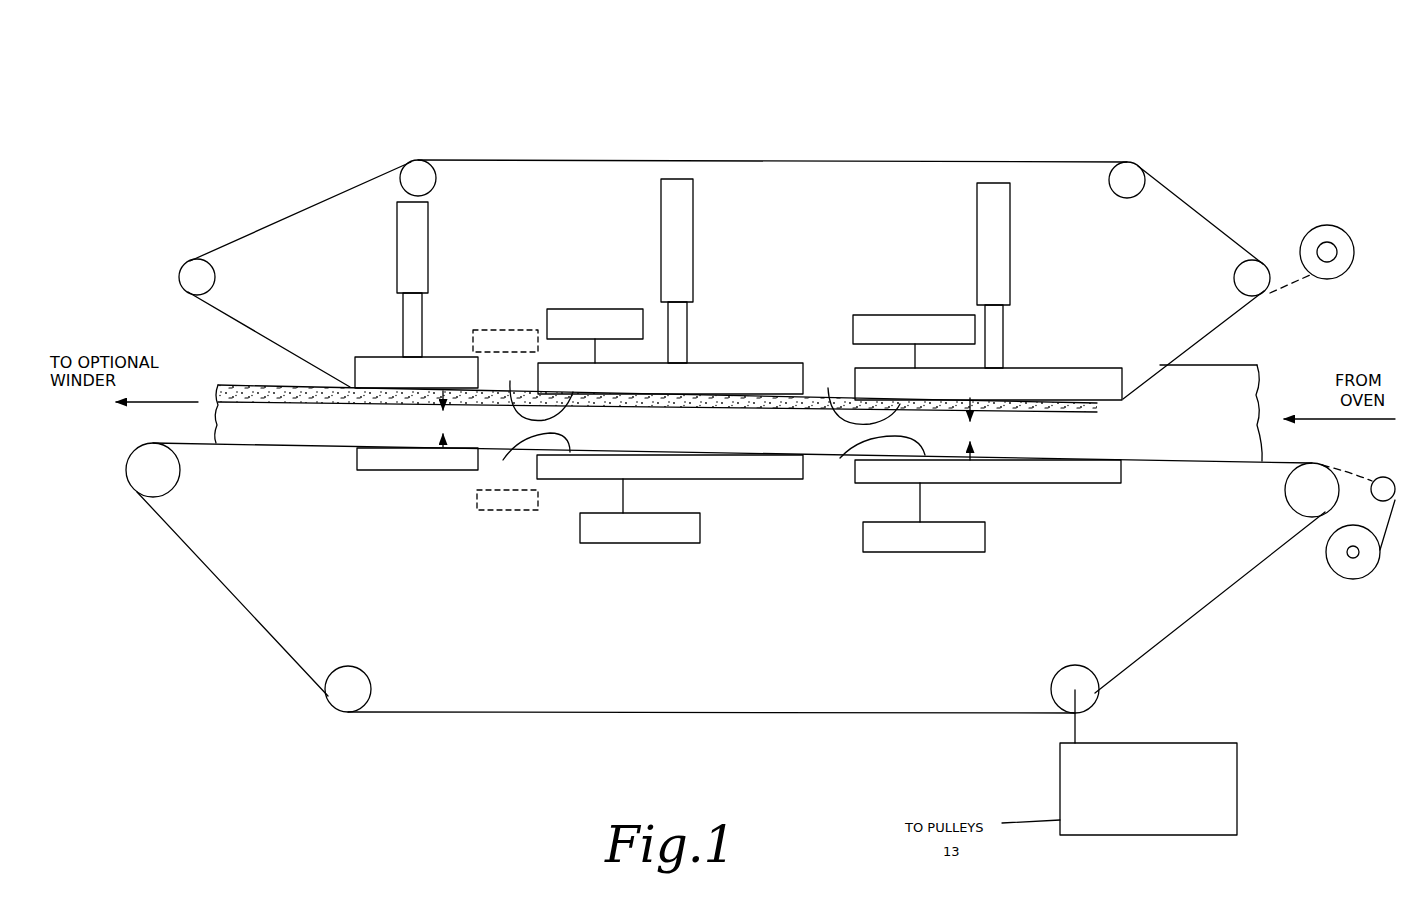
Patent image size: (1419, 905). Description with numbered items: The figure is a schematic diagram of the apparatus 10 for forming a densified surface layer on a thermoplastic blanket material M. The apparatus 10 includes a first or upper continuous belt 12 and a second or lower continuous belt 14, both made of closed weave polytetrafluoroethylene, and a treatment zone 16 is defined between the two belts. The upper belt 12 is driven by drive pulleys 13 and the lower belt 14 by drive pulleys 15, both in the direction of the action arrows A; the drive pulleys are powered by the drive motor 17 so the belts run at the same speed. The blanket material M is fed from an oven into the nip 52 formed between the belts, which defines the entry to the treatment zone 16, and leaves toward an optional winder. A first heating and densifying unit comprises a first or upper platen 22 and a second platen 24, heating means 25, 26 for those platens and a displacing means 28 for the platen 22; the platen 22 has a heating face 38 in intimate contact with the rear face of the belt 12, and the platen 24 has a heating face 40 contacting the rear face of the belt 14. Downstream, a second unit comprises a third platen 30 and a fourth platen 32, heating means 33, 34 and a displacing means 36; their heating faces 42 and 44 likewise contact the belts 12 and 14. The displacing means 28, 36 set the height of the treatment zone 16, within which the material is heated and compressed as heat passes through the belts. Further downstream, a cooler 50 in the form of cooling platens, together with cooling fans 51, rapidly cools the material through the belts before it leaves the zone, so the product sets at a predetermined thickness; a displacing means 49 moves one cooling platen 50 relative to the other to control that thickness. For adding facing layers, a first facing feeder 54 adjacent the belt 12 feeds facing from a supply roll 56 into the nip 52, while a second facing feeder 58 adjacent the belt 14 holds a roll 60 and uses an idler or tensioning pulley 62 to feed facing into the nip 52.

The apparatus 10 is at (1149, 90).
The first continuous belt 12 is at (1190, 203).
The drive pulleys 13 is at (197, 278).
The second continuous belt 14 is at (247, 612).
The drive pulleys 15 is at (168, 473).
The treatment zone 16 is at (709, 425).
The drive motor 17 is at (1237, 807).
The first platen 22 is at (1090, 378).
The second platen 24 is at (1103, 479).
The heating means 25 is at (893, 314).
The heating means 26 is at (945, 555).
The displacing means 28 is at (1004, 257).
The third platen 30 is at (780, 372).
The fourth platen 32 is at (775, 474).
The heating means 33 is at (667, 545).
The heating means 34 is at (594, 309).
The displacing means 36 is at (688, 241).
The heating face 38 is at (858, 392).
The heating face 40 is at (872, 462).
The heating face 42 is at (532, 391).
The heating face 44 is at (530, 458).
The displacing means 49 is at (420, 251).
The cooler 50 is at (372, 358).
The cooling fans 51 is at (490, 328).
The nip 52 is at (1168, 415).
The first facing feeder 54 is at (1327, 250).
The supply roll 56 is at (1317, 237).
The second facing feeder 58 is at (1348, 556).
The roll of facing material 60 is at (1365, 566).
The idler or tensioning pulley 62 is at (1384, 478).
The thermoplastic blanket material M is at (710, 432).
The action arrows A is at (193, 315).